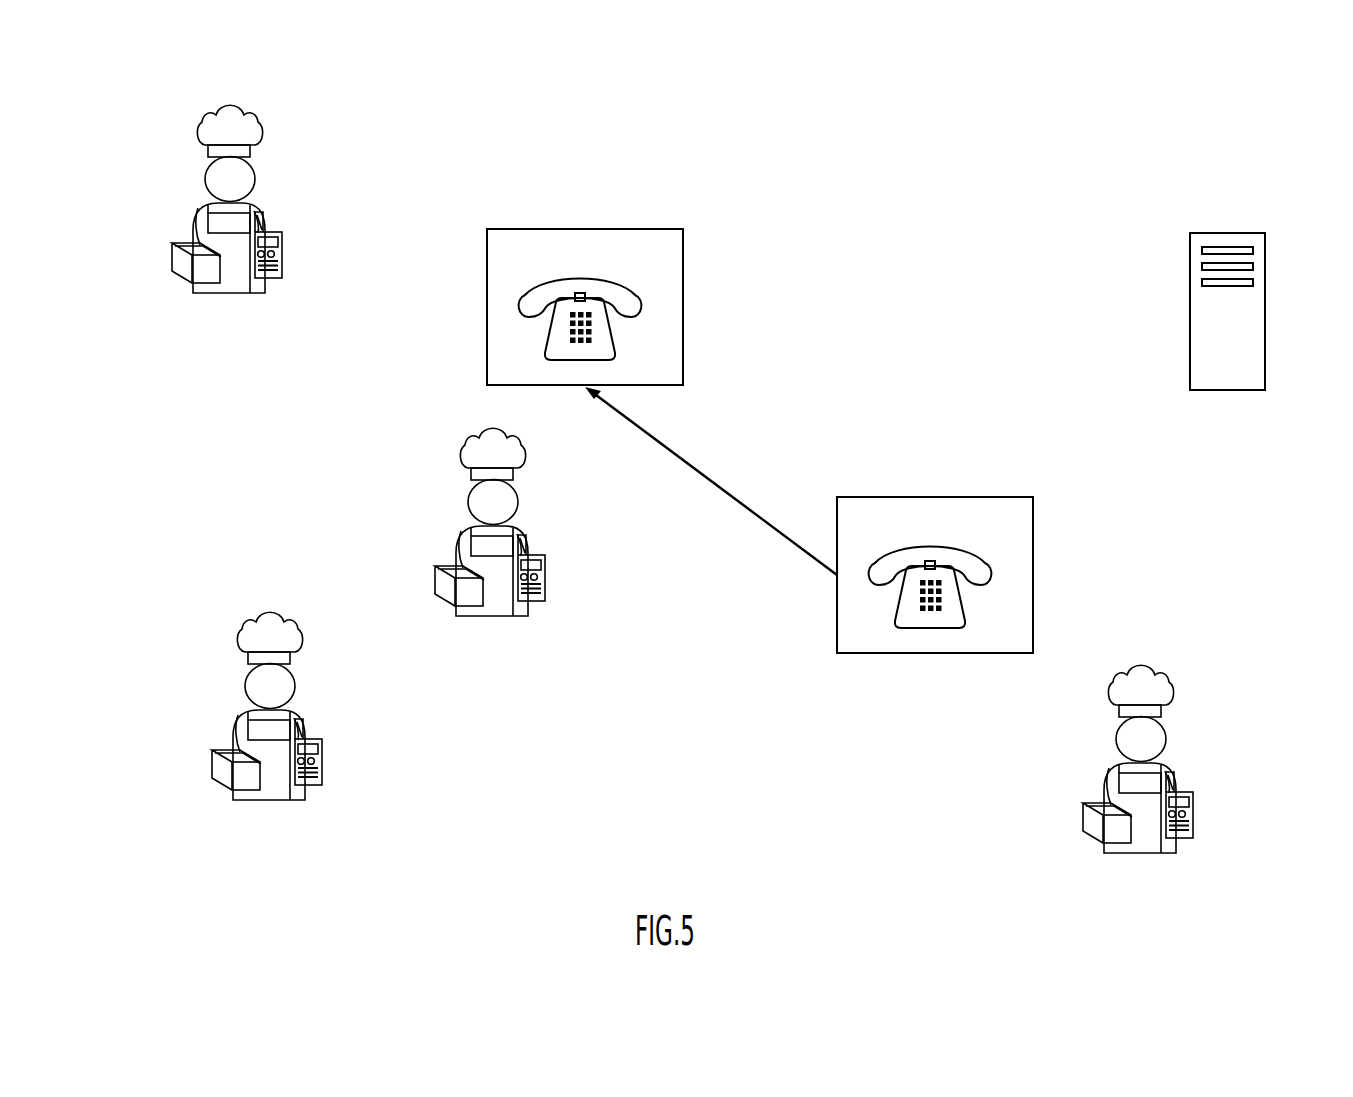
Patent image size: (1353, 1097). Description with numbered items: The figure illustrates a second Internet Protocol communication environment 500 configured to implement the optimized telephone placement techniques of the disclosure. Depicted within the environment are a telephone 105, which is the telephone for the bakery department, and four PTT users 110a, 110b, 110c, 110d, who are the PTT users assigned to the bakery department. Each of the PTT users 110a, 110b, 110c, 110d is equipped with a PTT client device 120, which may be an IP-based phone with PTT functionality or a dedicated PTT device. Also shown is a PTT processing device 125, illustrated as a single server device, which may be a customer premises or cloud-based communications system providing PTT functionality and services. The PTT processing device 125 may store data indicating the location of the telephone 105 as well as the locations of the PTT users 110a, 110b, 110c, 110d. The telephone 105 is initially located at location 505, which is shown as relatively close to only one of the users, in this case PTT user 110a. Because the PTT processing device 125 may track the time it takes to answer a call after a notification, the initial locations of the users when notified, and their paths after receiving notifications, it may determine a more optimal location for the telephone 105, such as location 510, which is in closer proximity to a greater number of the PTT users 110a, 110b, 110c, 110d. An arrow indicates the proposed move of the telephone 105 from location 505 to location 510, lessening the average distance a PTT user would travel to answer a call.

The IP communication environment 500 is at (995, 223).
The PTT user 110a is at (1118, 732).
The PTT user 110b is at (468, 507).
The PTT user 110c is at (237, 727).
The PTT user 110d is at (195, 127).
The PTT client device 120 is at (283, 253).
The location 510 is at (638, 229).
The location 505 is at (988, 497).
The telephone 105 is at (615, 283).
The PTT processing device 125 is at (1265, 257).